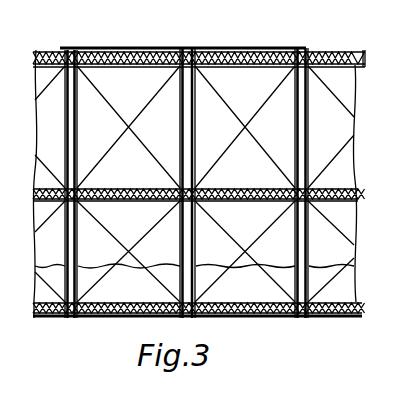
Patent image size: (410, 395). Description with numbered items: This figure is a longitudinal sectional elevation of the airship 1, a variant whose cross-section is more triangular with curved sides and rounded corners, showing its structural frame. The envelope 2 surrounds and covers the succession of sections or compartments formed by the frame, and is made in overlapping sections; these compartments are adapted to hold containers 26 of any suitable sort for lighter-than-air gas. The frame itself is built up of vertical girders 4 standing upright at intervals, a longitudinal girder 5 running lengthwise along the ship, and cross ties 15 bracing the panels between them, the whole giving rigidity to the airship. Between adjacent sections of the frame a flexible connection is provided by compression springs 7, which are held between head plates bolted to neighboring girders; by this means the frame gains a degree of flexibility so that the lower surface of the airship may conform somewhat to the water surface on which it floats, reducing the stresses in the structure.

The airship 1 is at (178, 100).
The envelope 2 is at (228, 49).
The vertical girders 4 is at (80, 247).
The longitudinal girder 5 is at (121, 67).
The compression springs 7 is at (299, 51).
The cross ties 15 is at (219, 100).
The containers 26 is at (231, 66).